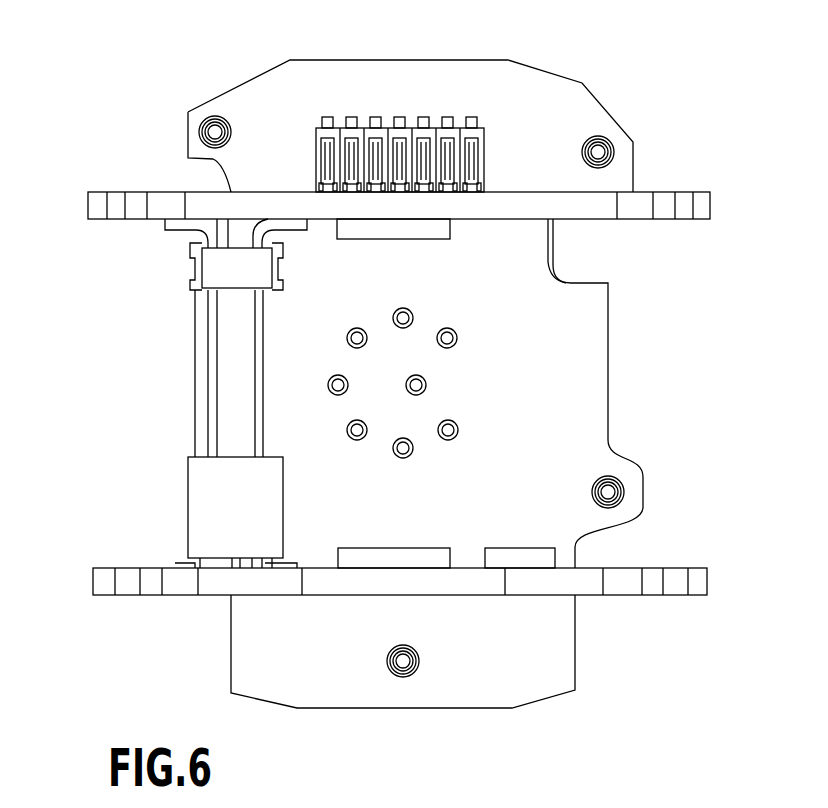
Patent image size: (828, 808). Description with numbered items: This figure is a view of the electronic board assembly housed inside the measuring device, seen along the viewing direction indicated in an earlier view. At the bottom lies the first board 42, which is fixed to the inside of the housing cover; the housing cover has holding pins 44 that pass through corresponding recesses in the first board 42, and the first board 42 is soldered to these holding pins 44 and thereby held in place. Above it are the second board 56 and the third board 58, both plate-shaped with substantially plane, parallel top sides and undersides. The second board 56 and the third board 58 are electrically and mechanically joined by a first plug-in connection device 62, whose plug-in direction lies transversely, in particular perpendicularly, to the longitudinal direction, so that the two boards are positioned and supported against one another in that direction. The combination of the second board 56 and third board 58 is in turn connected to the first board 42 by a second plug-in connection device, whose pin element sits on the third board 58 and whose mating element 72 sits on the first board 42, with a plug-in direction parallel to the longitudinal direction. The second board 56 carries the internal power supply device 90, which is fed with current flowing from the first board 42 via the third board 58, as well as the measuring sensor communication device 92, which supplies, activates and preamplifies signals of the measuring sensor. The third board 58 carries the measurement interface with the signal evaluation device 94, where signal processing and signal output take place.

The first board 42 is at (463, 680).
The holding pins 44 is at (450, 338).
The second board 56 is at (610, 577).
The third board 58 is at (633, 203).
The first plug-in connection device 62 is at (162, 474).
The mating element 72 is at (462, 134).
The power supply device 90 is at (393, 560).
The measuring sensor communication device 92 is at (500, 560).
The signal evaluation device 94 is at (412, 230).